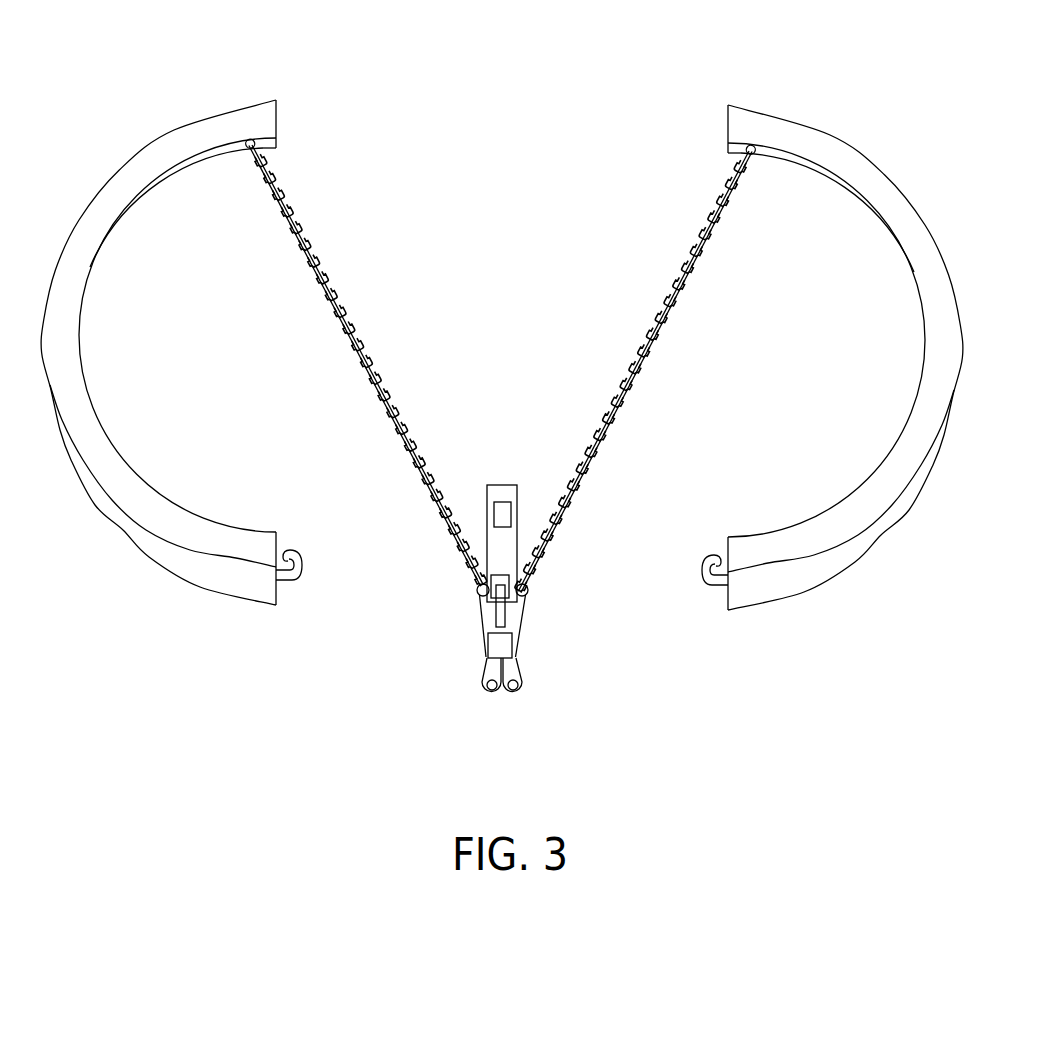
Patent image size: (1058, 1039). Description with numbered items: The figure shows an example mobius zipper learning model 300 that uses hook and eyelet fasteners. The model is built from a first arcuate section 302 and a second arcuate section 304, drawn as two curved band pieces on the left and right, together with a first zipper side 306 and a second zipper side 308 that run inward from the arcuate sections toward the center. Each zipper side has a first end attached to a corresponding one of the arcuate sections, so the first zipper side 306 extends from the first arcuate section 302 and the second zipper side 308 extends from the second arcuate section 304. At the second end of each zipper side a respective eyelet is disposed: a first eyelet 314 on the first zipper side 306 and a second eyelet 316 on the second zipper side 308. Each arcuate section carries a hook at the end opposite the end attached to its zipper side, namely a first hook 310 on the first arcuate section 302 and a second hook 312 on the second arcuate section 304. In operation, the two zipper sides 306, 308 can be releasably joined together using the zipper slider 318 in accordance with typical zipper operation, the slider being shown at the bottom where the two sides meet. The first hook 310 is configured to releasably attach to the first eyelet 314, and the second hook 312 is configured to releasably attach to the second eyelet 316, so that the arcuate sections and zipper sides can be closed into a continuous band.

The mobius zipper learning model 300 is at (196, 20).
The first arcuate section 302 is at (108, 170).
The second arcuate section 304 is at (848, 133).
The first zipper side 306 is at (325, 266).
The second zipper side 308 is at (655, 328).
The first hook 310 is at (306, 580).
The second hook 312 is at (700, 580).
The first eyelet 314 is at (488, 691).
The second eyelet 316 is at (518, 691).
The zipper slider 318 is at (498, 483).